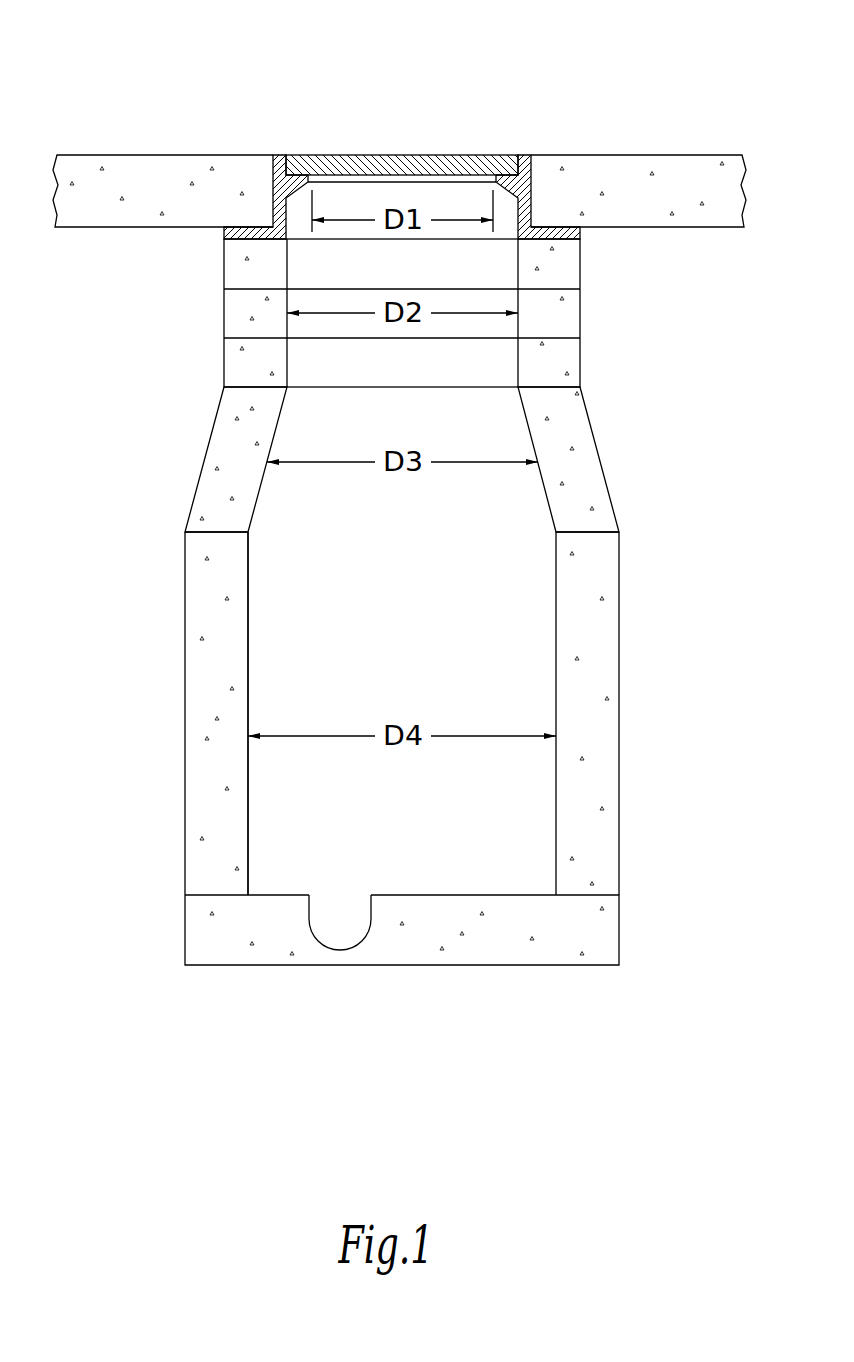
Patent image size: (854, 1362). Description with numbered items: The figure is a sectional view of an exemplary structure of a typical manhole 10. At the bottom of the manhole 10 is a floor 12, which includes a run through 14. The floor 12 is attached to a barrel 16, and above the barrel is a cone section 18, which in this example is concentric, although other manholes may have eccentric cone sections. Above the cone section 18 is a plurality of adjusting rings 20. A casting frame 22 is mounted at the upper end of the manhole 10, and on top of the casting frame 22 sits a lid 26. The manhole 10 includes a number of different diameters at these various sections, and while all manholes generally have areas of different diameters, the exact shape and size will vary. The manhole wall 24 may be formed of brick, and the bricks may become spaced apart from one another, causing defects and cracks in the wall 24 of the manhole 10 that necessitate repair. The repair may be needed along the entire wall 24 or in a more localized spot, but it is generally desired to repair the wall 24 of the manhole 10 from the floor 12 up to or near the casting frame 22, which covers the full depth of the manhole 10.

The manhole 10 is at (292, 62).
The floor 12 is at (269, 918).
The run through 14 is at (340, 948).
The barrel 16 is at (603, 640).
The cone section 18 is at (252, 491).
The adjusting rings 20 is at (562, 264).
The casting frame 22 is at (281, 158).
The manhole wall 24 is at (248, 672).
The lid 26 is at (471, 158).